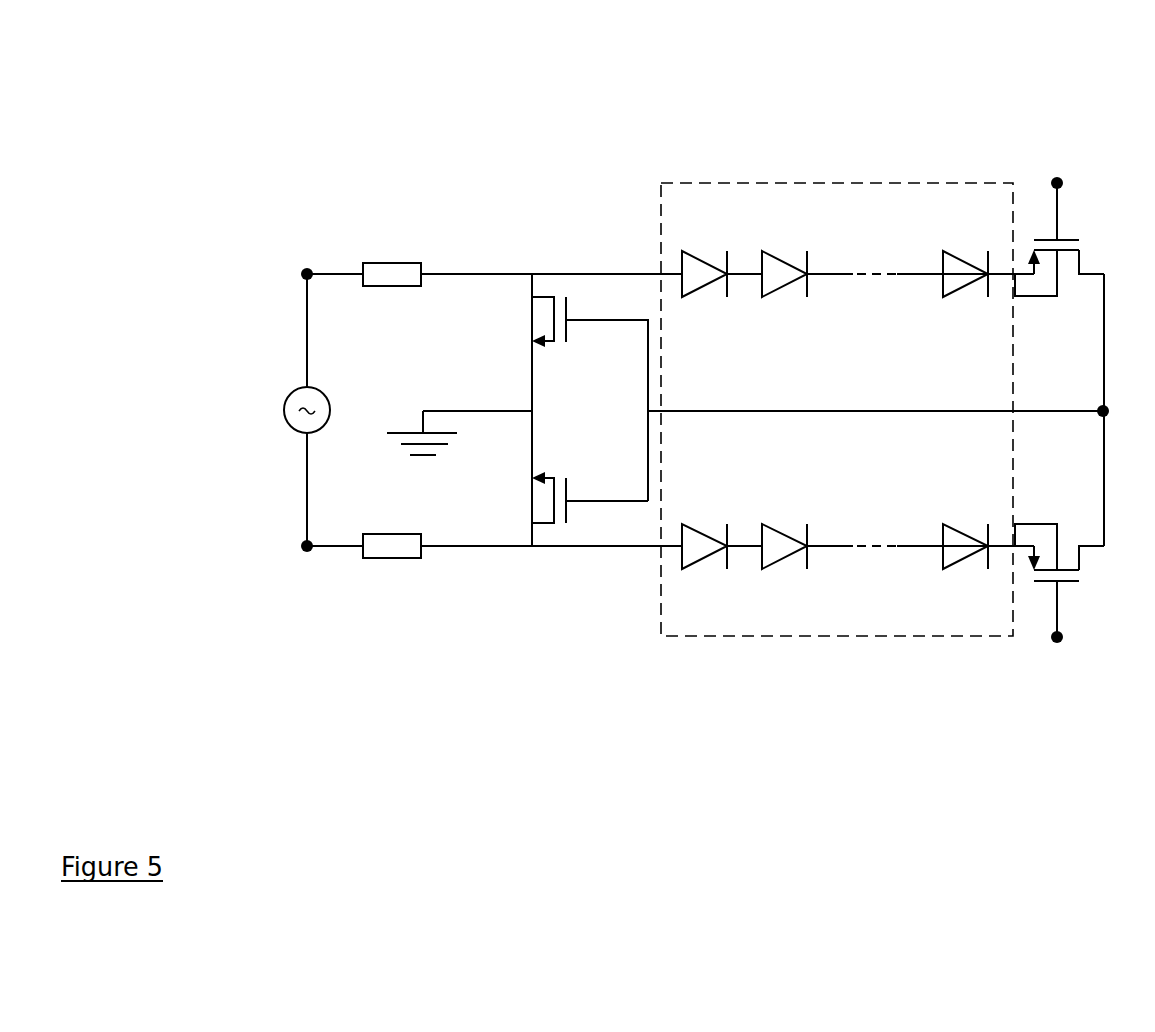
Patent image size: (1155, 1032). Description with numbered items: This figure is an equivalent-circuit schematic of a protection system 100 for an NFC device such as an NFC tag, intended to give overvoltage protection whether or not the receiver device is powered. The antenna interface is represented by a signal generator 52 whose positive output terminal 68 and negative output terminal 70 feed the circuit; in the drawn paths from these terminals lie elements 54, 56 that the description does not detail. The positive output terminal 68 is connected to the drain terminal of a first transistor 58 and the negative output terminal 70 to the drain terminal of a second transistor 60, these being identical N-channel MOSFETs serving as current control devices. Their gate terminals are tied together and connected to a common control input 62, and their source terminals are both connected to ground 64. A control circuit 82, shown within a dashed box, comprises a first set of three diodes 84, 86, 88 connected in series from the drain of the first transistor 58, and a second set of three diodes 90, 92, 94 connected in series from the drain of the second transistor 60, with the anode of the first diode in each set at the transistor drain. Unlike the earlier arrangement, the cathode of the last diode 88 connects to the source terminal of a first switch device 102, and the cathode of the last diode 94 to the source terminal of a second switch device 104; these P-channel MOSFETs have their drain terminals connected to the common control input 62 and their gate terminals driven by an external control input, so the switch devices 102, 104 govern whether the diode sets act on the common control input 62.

The protection system 100 is at (450, 126).
The signal generator 52 is at (295, 400).
The first resistor 54 is at (412, 270).
The second resistor 56 is at (412, 553).
The first transistor 58 is at (567, 322).
The second transistor 60 is at (568, 501).
The common control input 62 is at (1106, 417).
The ground 64 is at (445, 446).
The positive output terminal 68 is at (311, 265).
The negative output terminal 70 is at (310, 553).
The control circuit 82 is at (682, 183).
The first diode of first set 84 is at (707, 270).
The second diode of first set 86 is at (787, 270).
The last diode of first set 88 is at (968, 270).
The first diode of second set 90 is at (707, 549).
The second diode of second set 92 is at (787, 549).
The last diode of second set 94 is at (968, 549).
The first switch device 102 is at (1071, 235).
The second switch device 104 is at (1072, 585).